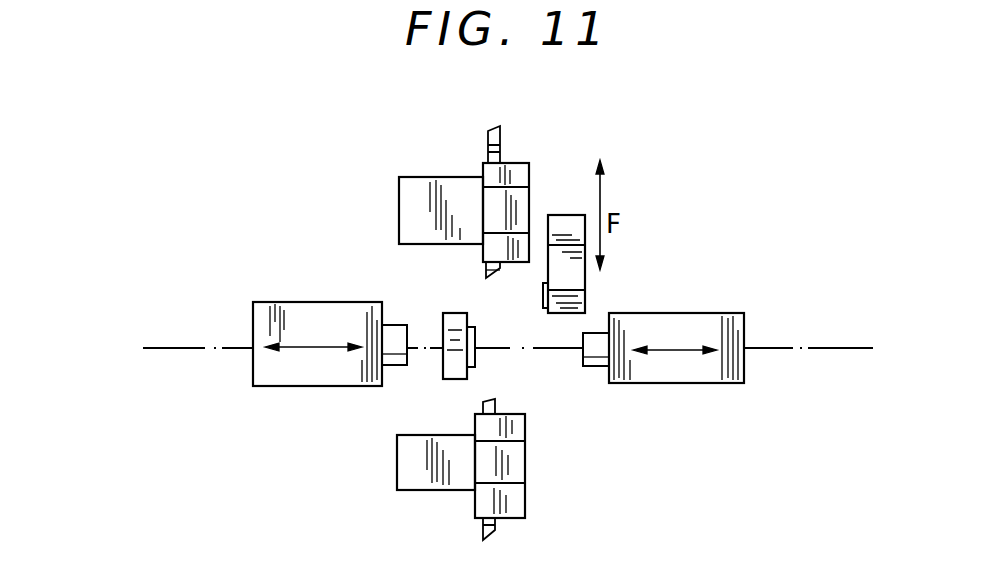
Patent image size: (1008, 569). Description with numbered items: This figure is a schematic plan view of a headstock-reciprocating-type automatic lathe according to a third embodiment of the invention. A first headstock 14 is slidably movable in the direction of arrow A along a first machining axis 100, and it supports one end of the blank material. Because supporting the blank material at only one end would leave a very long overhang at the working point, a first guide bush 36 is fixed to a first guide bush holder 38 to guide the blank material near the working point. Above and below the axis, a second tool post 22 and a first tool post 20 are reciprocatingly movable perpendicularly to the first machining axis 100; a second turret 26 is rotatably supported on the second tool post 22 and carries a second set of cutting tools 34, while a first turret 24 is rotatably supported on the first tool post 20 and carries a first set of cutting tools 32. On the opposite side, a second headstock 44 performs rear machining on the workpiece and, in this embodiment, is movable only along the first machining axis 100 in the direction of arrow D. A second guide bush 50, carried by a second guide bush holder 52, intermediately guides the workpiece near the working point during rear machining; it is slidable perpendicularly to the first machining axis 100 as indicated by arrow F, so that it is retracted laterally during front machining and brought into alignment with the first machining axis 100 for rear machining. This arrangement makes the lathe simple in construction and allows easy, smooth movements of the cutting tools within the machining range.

The first machining axis 100 is at (183, 346).
The first headstock 14 is at (275, 386).
The first guide bush holder 38 is at (443, 373).
The first guide bush 36 is at (476, 337).
The first set of cutting tools 32 is at (489, 402).
The second tool post 22 is at (417, 178).
The second set of cutting tools 34 is at (499, 133).
The second turret 26 is at (522, 200).
The second guide bush 50 is at (543, 297).
The second guide bush holder 52 is at (583, 292).
The second headstock 44 is at (694, 313).
The first turret 24 is at (515, 468).
The first tool post 20 is at (420, 480).